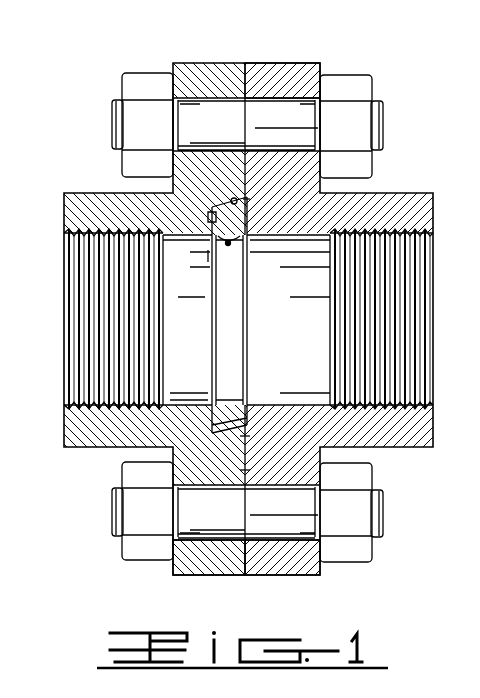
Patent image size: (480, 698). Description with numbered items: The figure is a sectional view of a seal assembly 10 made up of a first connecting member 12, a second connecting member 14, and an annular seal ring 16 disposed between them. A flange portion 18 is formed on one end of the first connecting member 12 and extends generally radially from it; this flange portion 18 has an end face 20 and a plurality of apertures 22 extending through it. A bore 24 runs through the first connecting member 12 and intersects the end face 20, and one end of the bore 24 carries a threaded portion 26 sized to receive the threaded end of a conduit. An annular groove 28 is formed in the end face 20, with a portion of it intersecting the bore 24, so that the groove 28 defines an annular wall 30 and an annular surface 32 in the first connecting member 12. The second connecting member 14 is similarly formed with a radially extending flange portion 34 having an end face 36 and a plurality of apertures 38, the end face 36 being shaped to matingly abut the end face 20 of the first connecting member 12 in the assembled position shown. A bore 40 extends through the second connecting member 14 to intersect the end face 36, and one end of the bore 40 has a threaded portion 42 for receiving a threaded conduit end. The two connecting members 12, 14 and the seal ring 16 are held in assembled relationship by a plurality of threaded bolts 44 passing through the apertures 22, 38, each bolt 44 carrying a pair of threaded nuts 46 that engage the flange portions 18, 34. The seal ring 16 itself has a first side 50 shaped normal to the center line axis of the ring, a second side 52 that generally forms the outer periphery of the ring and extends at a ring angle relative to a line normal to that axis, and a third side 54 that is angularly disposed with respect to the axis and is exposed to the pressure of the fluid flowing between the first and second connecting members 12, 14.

The seal assembly 10 is at (301, 57).
The first connecting member 12 is at (100, 207).
The second connecting member 14 is at (400, 207).
The seal ring 16 is at (228, 245).
The flange portion 18 is at (202, 565).
The end face 20 is at (252, 563).
The apertures 22 is at (212, 102).
The bore 24 is at (178, 405).
The threaded portion 26 is at (86, 395).
The annular groove 28 is at (212, 214).
The annular wall 30 is at (210, 256).
The annular surface 32 is at (232, 207).
The flange portion 34 is at (292, 563).
The end face 36 is at (255, 472).
The apertures 38 is at (281, 103).
The bore 40 is at (288, 406).
The threaded portion 42 is at (420, 397).
The threaded bolts 44 is at (207, 112).
The threaded nuts 46 is at (140, 82).
The first side 50 is at (247, 203).
The second side 52 is at (242, 438).
The third side 54 is at (212, 432).